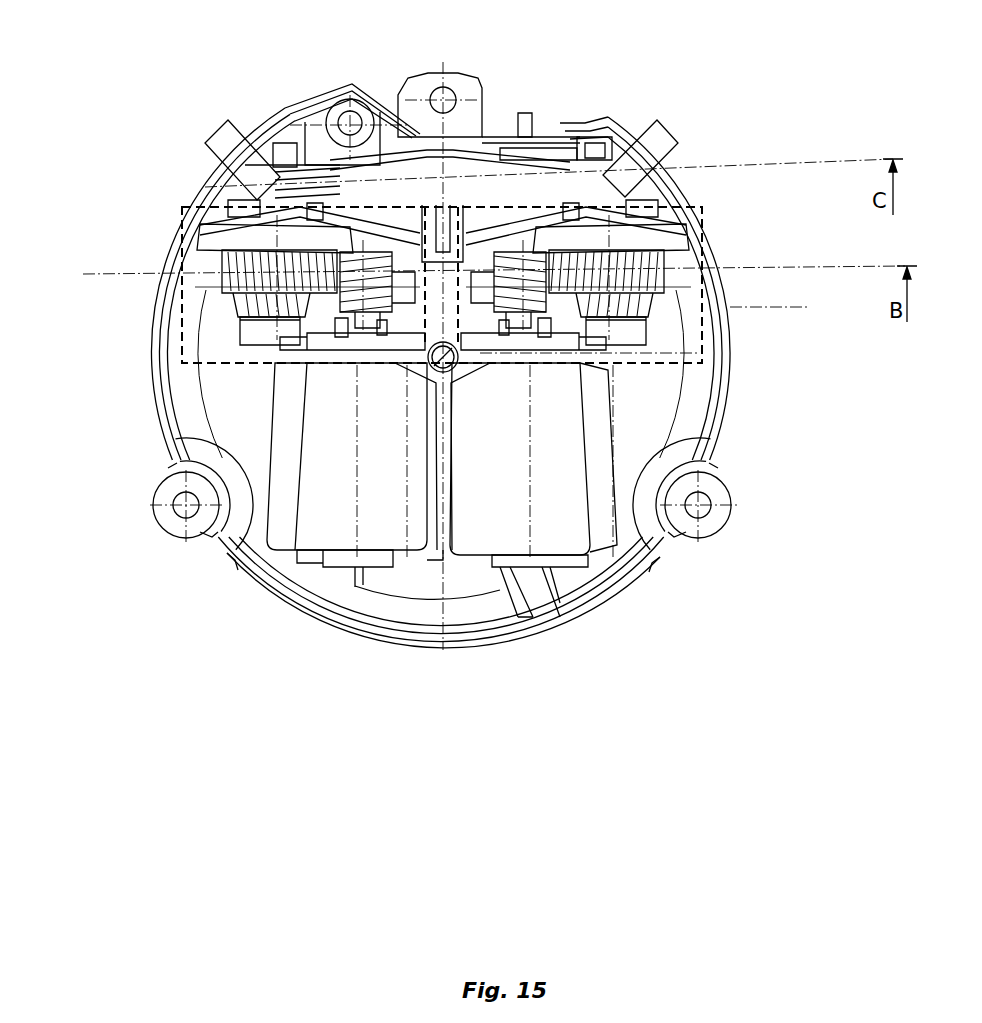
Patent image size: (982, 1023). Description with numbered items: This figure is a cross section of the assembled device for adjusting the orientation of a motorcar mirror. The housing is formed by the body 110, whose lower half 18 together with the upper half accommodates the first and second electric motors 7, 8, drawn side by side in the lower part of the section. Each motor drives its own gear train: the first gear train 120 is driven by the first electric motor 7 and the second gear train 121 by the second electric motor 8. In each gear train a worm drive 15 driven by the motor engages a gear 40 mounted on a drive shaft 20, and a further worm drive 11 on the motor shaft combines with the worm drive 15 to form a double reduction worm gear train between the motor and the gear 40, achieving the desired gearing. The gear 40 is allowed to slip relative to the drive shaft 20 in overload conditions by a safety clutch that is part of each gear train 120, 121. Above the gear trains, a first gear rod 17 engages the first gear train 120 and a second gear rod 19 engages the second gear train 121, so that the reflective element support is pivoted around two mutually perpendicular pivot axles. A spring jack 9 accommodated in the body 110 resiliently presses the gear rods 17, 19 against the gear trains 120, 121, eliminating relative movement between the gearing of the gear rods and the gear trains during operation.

The first electric motor 7 is at (667, 520).
The second electric motor 8 is at (322, 415).
The spring jack 9 is at (493, 172).
The worm drive 11 is at (280, 367).
The worm drive 15 is at (262, 378).
The first gear rod 17 is at (253, 157).
The lower half 18 is at (493, 603).
The second gear rod 19 is at (615, 158).
The drive shaft 20 is at (283, 153).
The gear 40 is at (270, 277).
The body 110 is at (407, 603).
The first gear train 120 is at (700, 347).
The second gear train 121 is at (180, 327).